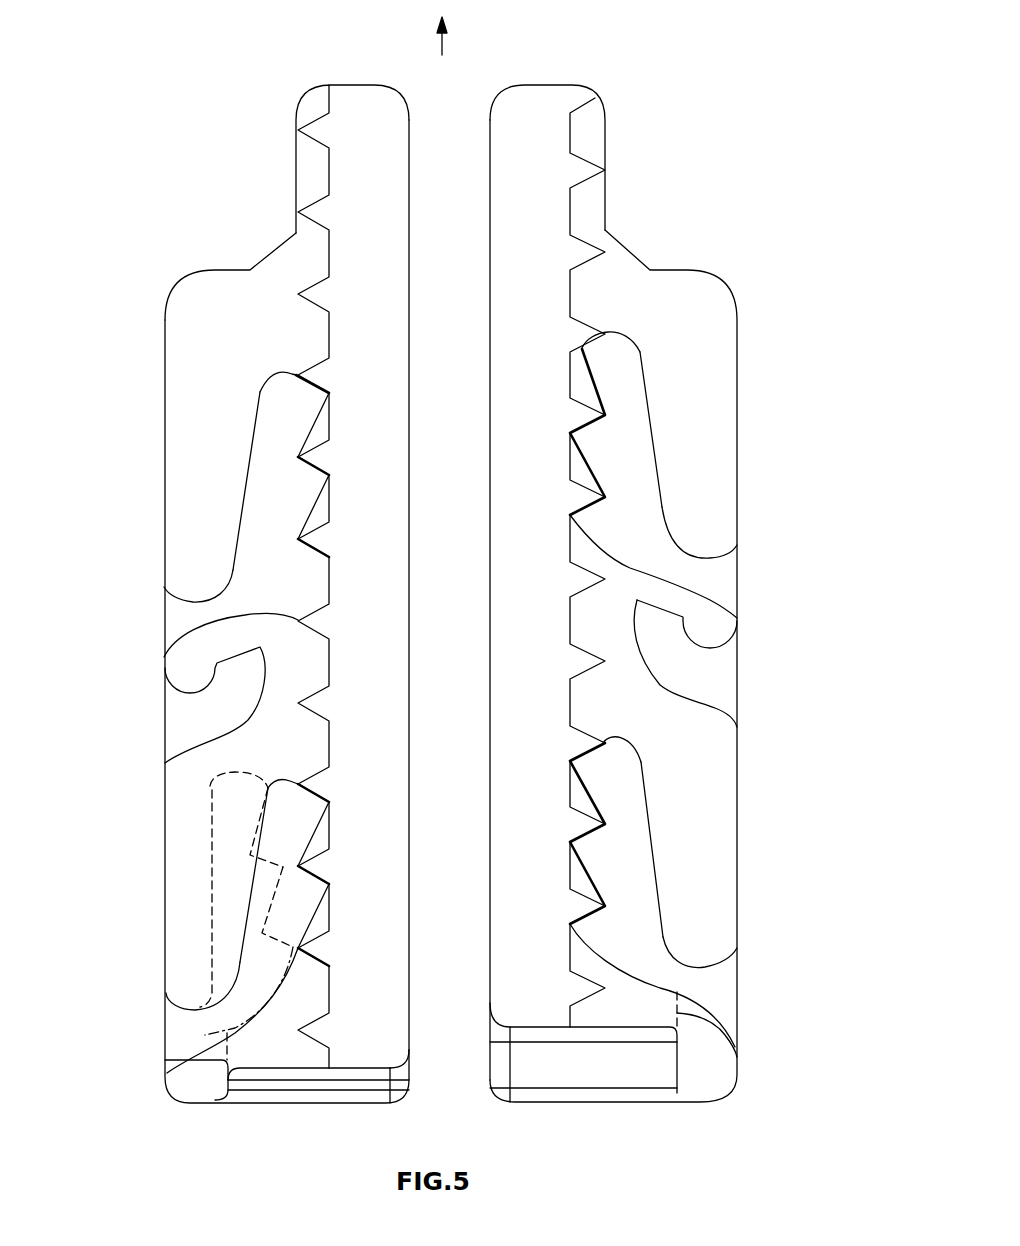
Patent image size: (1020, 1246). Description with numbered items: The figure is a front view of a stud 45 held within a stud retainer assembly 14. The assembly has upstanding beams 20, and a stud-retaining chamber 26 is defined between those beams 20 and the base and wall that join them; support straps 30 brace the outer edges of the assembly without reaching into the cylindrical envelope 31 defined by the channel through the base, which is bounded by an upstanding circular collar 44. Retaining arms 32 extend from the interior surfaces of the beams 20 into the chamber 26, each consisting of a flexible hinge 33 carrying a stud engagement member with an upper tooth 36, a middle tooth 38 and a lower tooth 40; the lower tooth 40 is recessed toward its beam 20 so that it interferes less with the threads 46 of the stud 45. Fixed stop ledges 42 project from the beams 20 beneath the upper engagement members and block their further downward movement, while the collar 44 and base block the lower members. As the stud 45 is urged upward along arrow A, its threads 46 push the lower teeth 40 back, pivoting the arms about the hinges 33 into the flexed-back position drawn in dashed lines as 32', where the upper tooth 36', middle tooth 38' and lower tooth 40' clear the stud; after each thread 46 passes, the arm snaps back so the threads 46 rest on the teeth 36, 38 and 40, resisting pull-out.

The stud retainer assembly 14 is at (740, 92).
The upstanding beams 20 is at (165, 483).
The stud-retaining chamber 26 is at (245, 315).
The support straps 30 is at (449, 165).
The cylindrical envelope 31 is at (183, 1057).
The retaining arms 32 is at (442, 638).
The flexed back retaining arm 32' is at (186, 916).
The hinge 33 is at (178, 617).
The upper tooth 36 is at (381, 787).
The upper tooth in flexed-back position 36' is at (177, 826).
The middle tooth 38 is at (381, 897).
The middle tooth in flexed-back position 38' is at (182, 907).
The lower tooth 40 is at (381, 974).
The lower tooth in flexed-back position 40' is at (186, 990).
The fixed stop ledges 42 is at (197, 702).
The upstanding circular collar 44 is at (253, 1070).
The stud 45 is at (580, 85).
The threads 46 is at (308, 284).